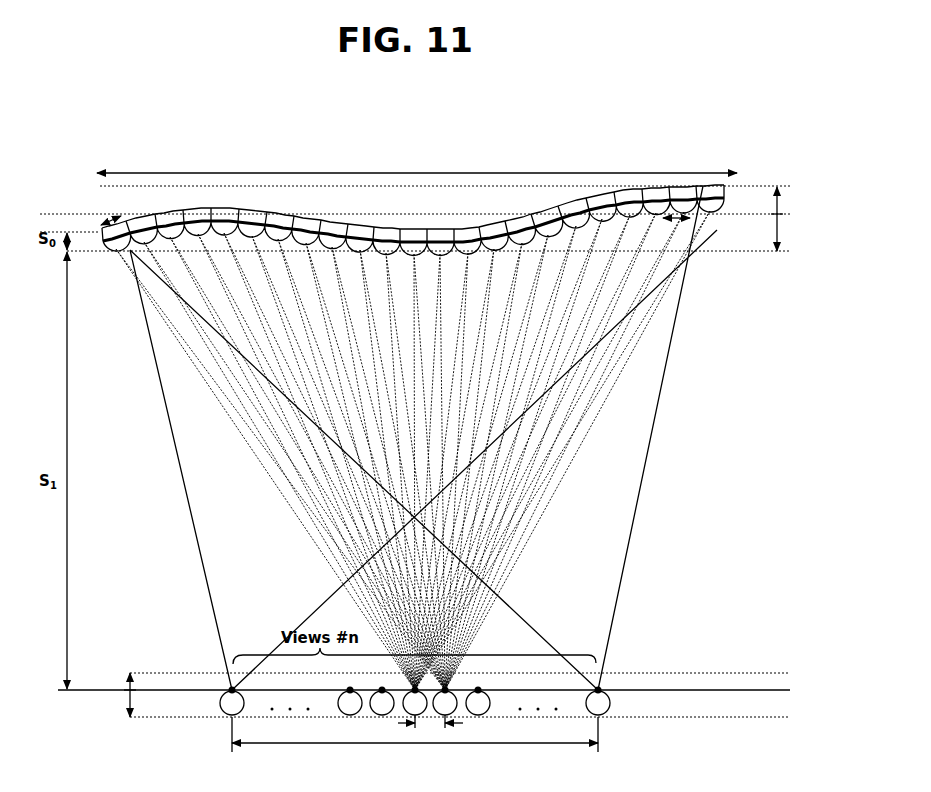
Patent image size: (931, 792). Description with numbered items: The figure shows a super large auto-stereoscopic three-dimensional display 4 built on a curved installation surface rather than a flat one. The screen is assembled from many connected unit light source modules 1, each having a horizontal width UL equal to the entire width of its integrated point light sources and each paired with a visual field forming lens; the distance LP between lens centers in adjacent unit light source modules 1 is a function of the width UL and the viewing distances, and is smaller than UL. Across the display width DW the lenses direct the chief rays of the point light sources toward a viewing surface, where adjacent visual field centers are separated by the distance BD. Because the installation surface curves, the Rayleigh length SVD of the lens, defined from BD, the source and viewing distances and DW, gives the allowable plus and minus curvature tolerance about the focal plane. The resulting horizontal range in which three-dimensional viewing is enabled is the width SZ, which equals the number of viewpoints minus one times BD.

The unit light source module 1 is at (725, 196).
The super large auto-stereoscopic 3D display 4 is at (692, 152).
The display width DW is at (417, 163).
The Rayleigh length of visual field forming lens SVD is at (456, 452).
The horizontal width of unit light source module UL is at (108, 212).
The distance between lens centers in adjacent unit light source modules LP is at (676, 230).
The horizontal width of entire 3D visual field SZ is at (415, 741).
The distance between centers of adjacent visual fields BD is at (430, 730).